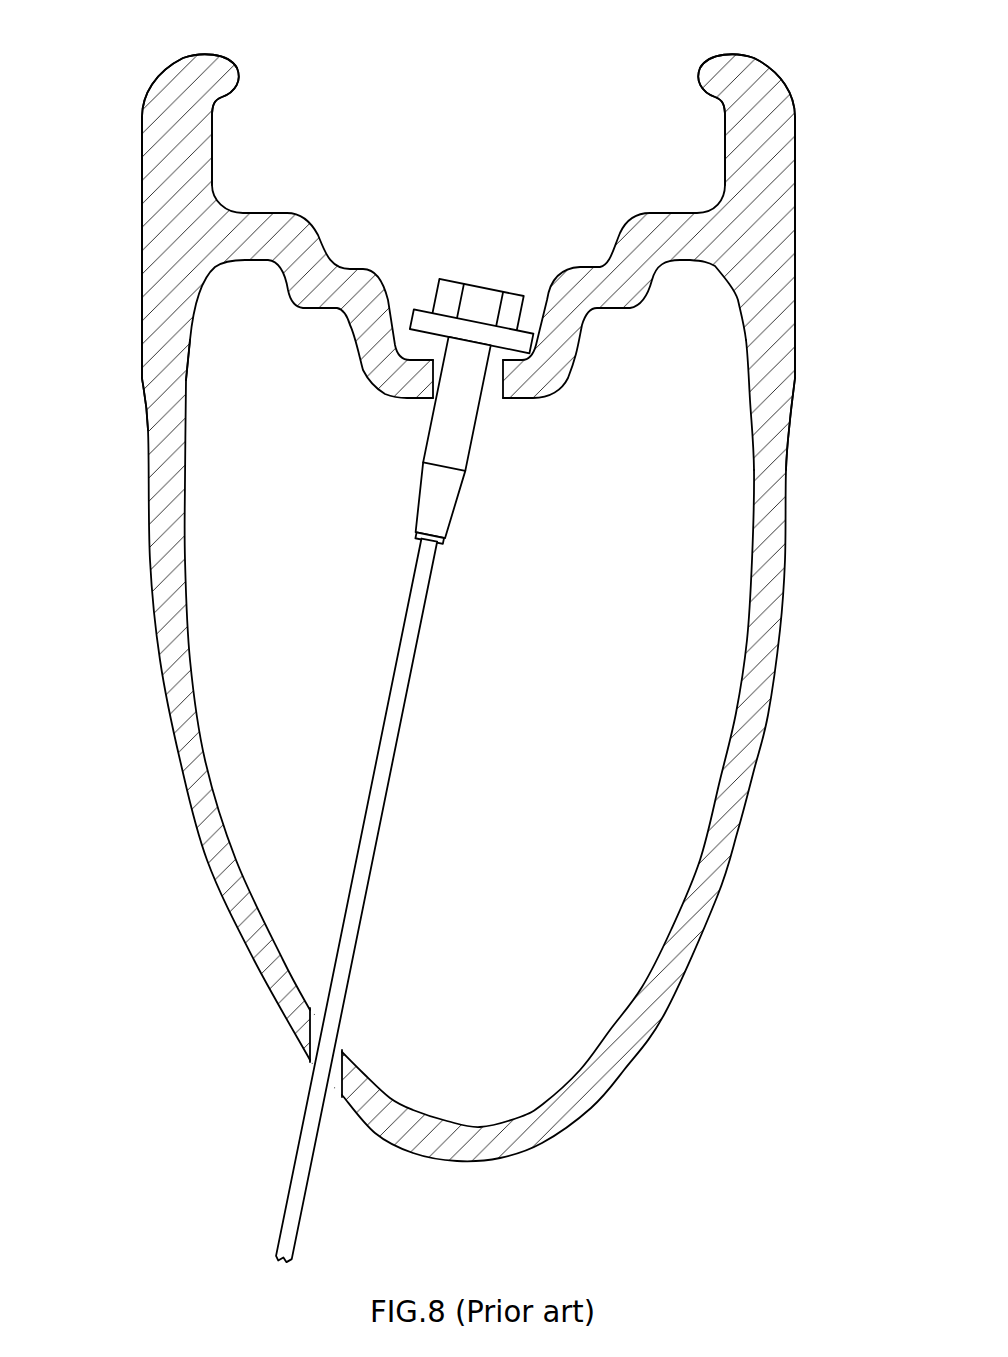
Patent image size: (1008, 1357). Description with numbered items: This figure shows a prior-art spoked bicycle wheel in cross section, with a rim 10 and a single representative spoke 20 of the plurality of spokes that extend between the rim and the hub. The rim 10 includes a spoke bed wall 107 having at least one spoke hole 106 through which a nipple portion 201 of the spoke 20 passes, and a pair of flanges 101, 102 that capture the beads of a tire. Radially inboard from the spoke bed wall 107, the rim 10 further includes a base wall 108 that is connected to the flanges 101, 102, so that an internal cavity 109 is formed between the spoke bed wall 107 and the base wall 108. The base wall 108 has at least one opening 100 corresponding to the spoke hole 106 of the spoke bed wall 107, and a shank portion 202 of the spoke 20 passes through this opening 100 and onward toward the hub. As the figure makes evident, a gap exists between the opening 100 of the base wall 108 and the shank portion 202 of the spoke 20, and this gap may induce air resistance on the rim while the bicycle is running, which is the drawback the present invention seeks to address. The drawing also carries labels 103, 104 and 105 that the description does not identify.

The rim 10 is at (345, 194).
The spoke 20 is at (430, 723).
The opening 100 is at (330, 1098).
The flange 101 is at (152, 182).
The flange 102 is at (787, 163).
The inner wall 103 is at (270, 262).
The first flange 104 is at (230, 80).
The second flange 105 is at (712, 78).
The spoke hole 106 is at (495, 392).
The spoke bed wall 107 is at (572, 385).
The base wall 108 is at (640, 1008).
The internal cavity 109 is at (645, 850).
The nipple portion 201 is at (482, 292).
The shank portion 202 is at (367, 860).